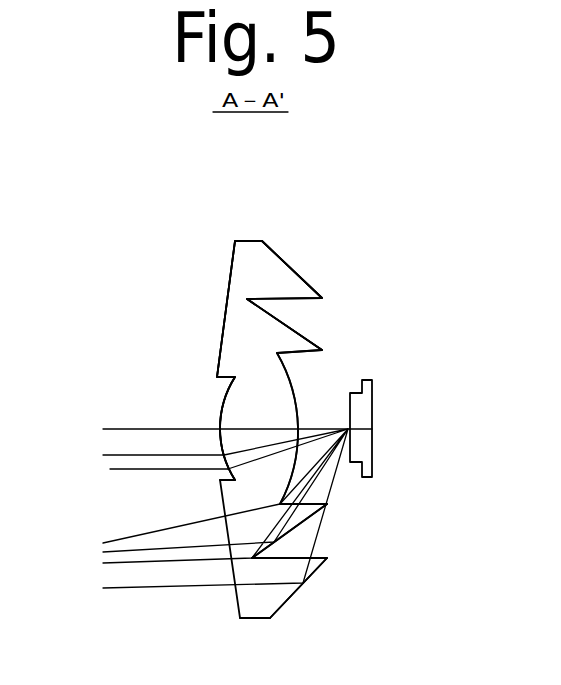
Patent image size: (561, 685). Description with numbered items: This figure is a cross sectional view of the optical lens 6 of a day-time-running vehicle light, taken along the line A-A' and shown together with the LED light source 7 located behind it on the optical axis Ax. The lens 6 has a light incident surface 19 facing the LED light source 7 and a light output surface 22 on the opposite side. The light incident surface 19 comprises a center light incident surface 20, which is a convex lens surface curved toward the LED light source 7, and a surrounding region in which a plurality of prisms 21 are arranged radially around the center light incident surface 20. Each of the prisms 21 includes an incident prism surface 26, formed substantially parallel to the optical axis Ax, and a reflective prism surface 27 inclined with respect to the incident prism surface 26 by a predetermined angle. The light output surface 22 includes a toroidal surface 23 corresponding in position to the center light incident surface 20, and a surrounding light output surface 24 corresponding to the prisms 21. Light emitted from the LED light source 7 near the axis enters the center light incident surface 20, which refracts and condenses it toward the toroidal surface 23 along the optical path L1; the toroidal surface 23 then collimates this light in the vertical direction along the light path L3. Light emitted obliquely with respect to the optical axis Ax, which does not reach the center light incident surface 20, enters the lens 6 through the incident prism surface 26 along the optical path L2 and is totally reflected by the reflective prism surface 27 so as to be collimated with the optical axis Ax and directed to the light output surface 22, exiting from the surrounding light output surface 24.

The lens 6 is at (283, 202).
The LED light source 7 is at (363, 412).
The light incident surface 19 is at (392, 300).
The center light incident surface 20 is at (290, 378).
The prisms 21 is at (282, 340).
The light output surface 22 is at (177, 277).
The toroidal surface 23 is at (222, 408).
The surrounding light output surface 24 is at (222, 335).
The incident prism surface 26 is at (316, 610).
The reflective prism surface 27 is at (322, 533).
The optical axis Ax is at (141, 429).
The optical path L1 is at (263, 458).
The optical path L2 is at (252, 540).
The light path L3 is at (178, 455).